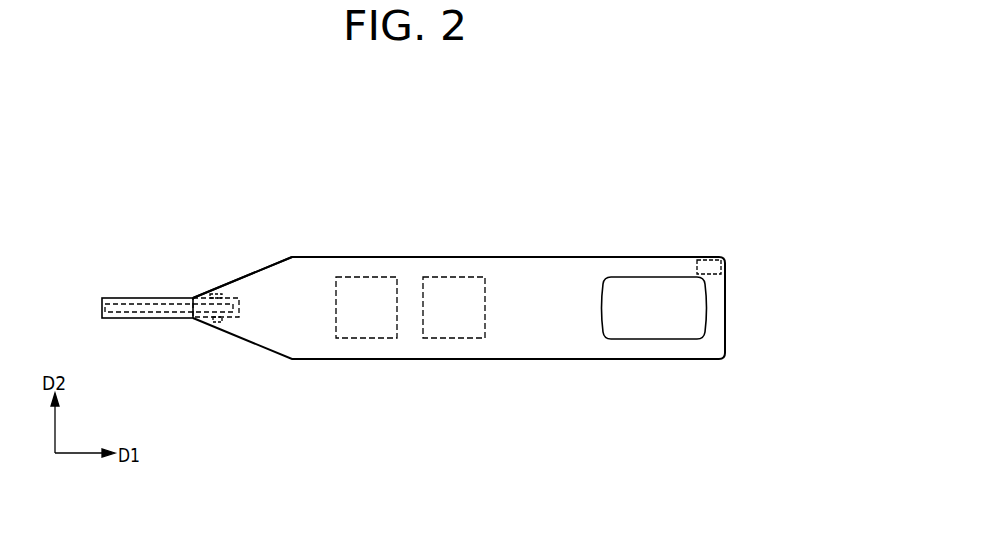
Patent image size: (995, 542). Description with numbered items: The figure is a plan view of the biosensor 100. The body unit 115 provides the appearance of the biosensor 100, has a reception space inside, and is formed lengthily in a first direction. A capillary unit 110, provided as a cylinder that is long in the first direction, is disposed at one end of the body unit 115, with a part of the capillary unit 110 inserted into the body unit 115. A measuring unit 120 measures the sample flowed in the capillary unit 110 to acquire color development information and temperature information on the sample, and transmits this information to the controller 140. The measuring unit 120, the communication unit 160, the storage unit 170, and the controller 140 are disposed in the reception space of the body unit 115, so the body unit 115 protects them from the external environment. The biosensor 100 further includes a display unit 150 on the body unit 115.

The biosensor 100 is at (612, 137).
The capillary unit 110 is at (148, 298).
The body unit 115 is at (312, 269).
The measuring unit 120 is at (217, 295).
The controller 140 is at (366, 277).
The display unit 150 is at (651, 277).
The communication unit 160 is at (708, 260).
The storage unit 170 is at (452, 277).